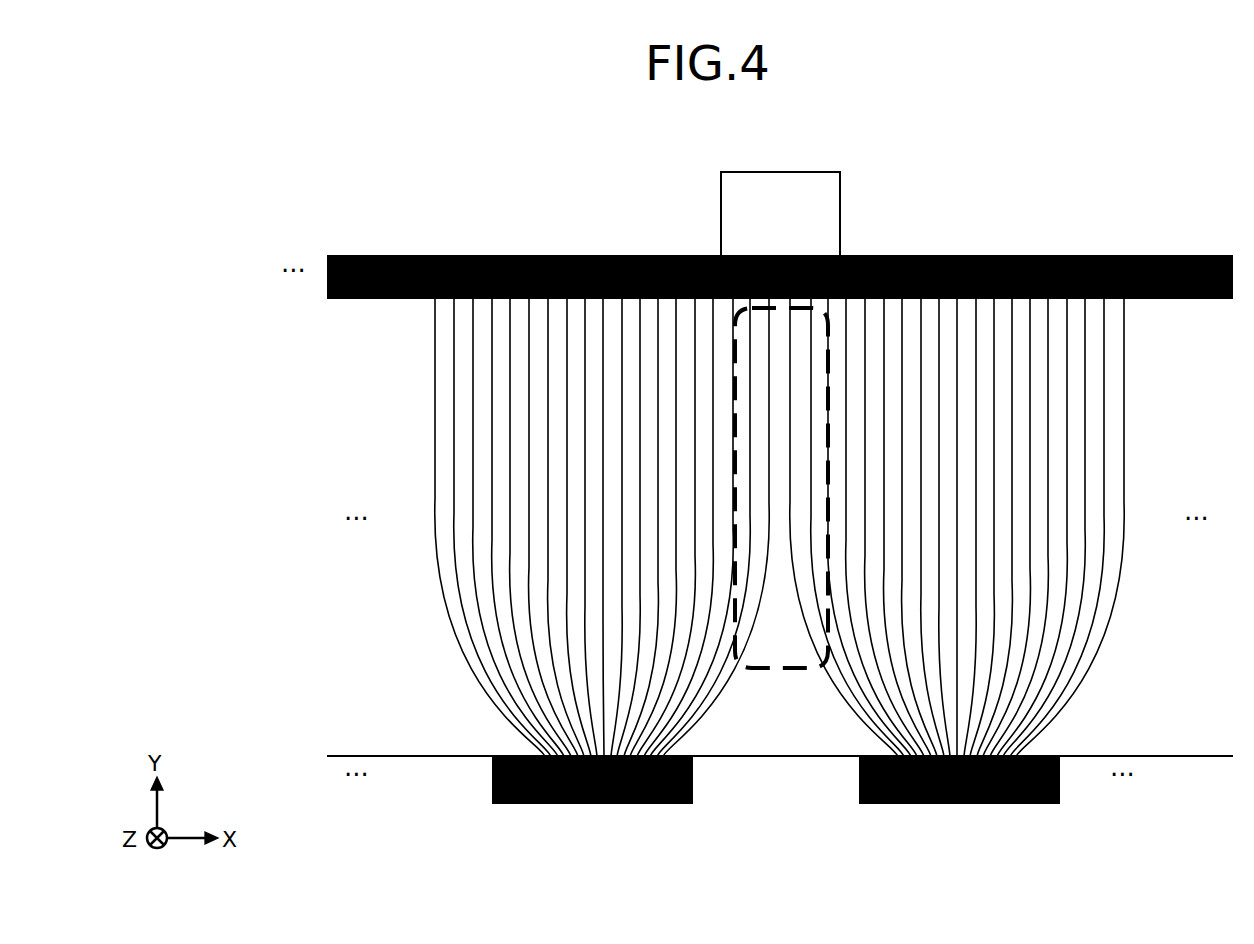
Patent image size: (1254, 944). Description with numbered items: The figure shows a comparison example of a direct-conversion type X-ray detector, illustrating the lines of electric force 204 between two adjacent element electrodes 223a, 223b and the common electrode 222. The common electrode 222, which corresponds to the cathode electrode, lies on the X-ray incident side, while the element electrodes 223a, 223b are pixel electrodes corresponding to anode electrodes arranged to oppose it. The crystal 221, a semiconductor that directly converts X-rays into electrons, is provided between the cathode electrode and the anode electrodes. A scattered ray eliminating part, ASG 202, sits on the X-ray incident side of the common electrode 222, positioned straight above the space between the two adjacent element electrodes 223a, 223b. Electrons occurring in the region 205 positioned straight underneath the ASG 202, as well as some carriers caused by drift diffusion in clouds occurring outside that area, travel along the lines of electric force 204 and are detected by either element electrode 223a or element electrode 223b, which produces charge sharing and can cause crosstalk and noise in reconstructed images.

The scattered ray eliminating part (ASG) 202 is at (780, 172).
The common electrode 222 is at (1182, 255).
The crystal 221 is at (1192, 735).
The element electrode 223a is at (592, 805).
The element electrode 223b is at (958, 805).
The lines of electric force 204 is at (717, 710).
The region 205 is at (797, 672).